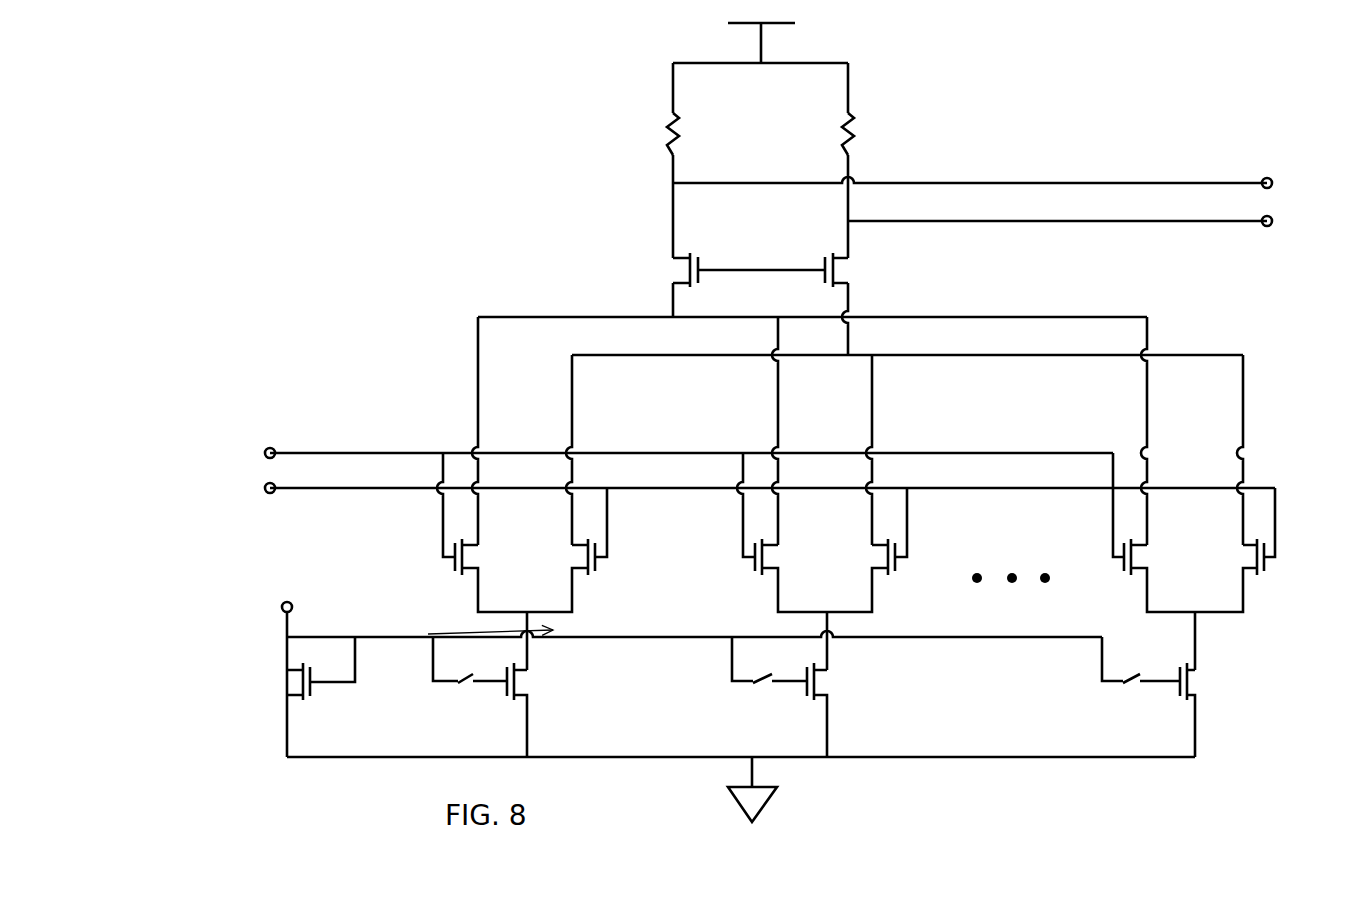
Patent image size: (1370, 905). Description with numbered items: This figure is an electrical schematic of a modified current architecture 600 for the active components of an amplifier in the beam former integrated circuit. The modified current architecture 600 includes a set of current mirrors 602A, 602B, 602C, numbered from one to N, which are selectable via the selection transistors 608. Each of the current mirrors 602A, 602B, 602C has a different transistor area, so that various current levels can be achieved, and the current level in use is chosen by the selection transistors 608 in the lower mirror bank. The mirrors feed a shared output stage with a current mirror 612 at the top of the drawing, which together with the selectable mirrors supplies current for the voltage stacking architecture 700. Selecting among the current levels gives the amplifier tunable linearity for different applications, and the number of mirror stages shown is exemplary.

The modified current architecture 600 is at (428, 387).
The current mirror 602A is at (415, 580).
The current mirror 602B is at (745, 593).
The current mirror 602C is at (1278, 593).
The selection transistors 608 is at (385, 783).
The current mirror 612 is at (875, 272).
The voltage stacking architecture 700 is at (907, 395).